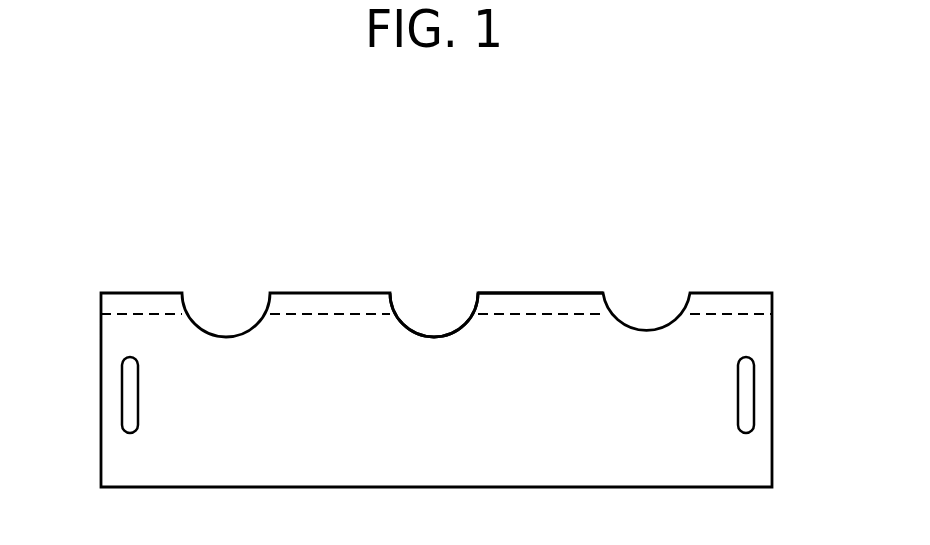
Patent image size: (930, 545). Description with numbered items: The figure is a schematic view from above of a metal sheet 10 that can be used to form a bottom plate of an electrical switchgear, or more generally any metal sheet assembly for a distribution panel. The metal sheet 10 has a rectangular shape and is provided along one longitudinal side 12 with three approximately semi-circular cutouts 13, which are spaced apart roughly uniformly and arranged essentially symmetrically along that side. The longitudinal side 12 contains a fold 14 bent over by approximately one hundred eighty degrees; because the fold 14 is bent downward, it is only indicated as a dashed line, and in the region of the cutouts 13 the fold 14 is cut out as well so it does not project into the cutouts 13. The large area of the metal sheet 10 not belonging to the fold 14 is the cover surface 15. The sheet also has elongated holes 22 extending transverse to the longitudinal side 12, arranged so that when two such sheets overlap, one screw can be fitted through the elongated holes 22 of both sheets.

The metal sheet 10 is at (282, 236).
The longitudinal side 12 is at (533, 293).
The cutouts 13 is at (438, 300).
The fold 14 is at (342, 304).
The cover surface 15 is at (153, 440).
The elongated holes 22 is at (747, 383).